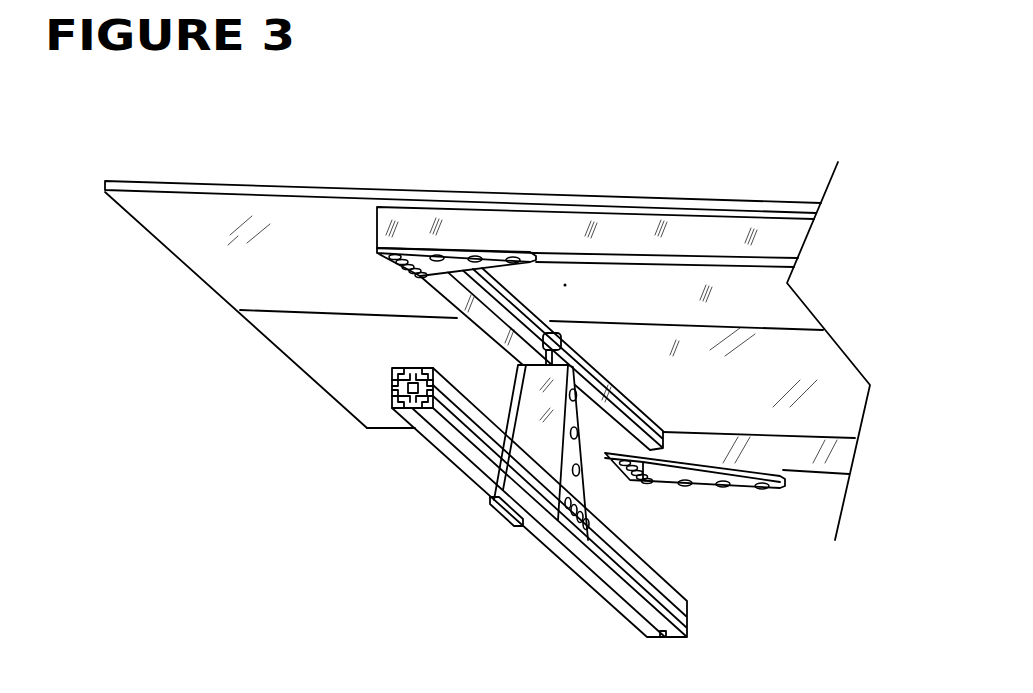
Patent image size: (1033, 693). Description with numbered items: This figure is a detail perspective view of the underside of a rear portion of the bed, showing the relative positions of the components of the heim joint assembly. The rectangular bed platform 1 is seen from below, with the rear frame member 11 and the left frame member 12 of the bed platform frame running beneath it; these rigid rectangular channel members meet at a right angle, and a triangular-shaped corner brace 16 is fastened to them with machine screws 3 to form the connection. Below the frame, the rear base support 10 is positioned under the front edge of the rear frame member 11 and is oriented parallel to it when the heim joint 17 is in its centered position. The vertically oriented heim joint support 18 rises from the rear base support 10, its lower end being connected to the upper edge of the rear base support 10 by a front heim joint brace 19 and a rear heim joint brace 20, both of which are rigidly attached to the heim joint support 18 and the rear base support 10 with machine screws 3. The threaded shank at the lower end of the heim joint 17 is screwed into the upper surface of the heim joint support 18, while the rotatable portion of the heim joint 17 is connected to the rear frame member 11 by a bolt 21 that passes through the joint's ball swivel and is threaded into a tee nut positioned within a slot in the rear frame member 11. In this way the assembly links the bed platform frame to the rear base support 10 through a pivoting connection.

The bed platform 1 is at (172, 232).
The machine screws 3 is at (513, 256).
The rear base support 10 is at (450, 457).
The rear frame member 11 is at (465, 315).
The left frame member 12 is at (563, 232).
The corner braces 16 is at (452, 262).
The heim joint 17 is at (557, 322).
The heim joint support 18 is at (545, 425).
The front heim joint brace 19 is at (587, 495).
The rear heim joint brace 20 is at (513, 427).
The bolt 21 is at (563, 347).